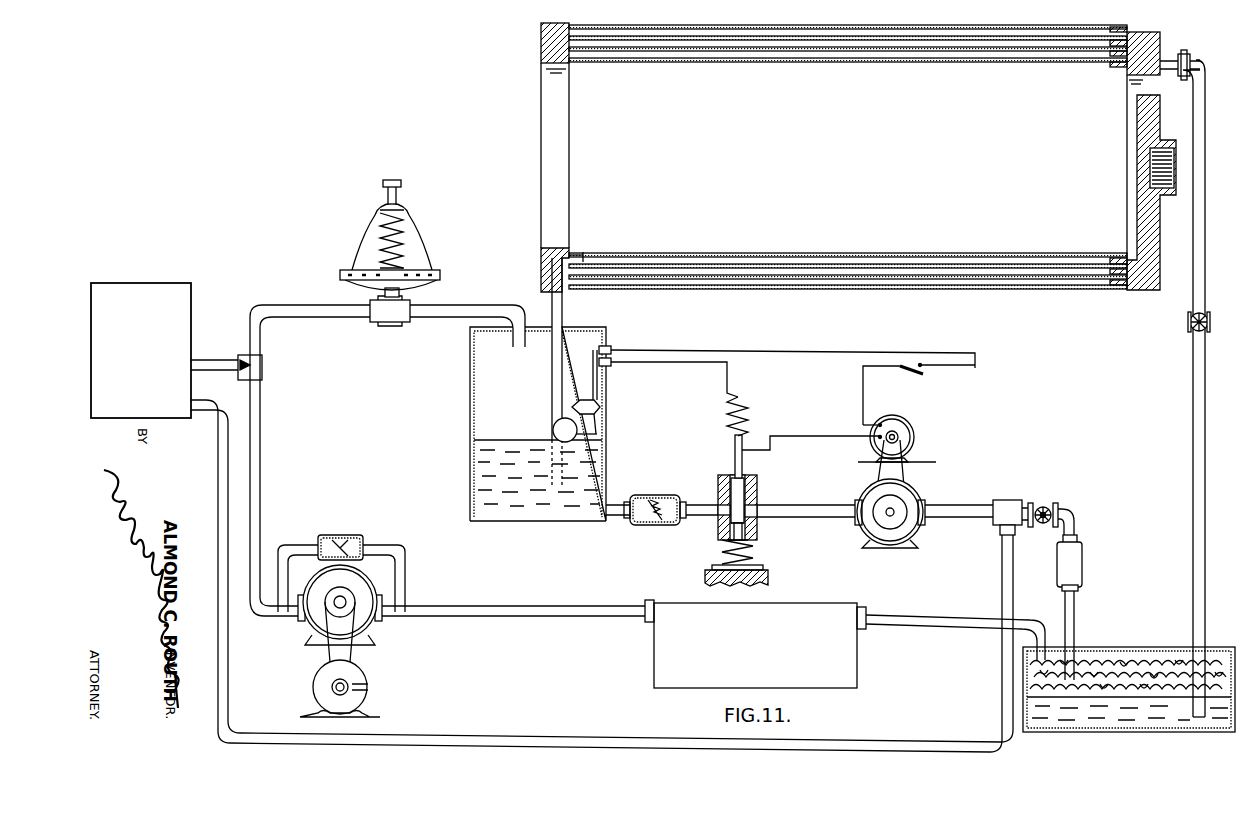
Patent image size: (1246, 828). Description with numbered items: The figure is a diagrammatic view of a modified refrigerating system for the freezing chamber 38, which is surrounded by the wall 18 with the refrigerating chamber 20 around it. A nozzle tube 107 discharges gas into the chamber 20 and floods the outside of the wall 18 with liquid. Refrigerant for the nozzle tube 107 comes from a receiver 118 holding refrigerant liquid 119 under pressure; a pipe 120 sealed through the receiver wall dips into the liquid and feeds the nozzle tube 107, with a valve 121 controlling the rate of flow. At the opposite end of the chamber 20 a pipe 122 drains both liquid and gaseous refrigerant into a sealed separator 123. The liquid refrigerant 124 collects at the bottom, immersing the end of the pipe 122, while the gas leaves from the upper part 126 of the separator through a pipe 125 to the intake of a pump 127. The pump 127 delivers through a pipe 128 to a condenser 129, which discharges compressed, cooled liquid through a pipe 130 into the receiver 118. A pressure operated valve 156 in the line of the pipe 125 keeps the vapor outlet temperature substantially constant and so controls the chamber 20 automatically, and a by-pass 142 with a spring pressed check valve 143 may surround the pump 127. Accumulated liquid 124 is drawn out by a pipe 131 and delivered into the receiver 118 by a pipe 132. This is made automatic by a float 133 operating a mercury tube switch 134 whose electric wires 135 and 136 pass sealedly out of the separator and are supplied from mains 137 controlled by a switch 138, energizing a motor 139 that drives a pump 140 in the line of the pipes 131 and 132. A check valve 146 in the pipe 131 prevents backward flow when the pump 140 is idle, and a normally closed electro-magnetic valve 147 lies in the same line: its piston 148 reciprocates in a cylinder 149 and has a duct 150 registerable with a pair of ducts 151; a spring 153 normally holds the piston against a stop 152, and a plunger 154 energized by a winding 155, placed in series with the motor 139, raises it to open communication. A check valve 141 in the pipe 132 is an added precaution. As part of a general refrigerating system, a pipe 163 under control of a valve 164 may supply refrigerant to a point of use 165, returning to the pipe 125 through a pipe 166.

The wall 18 is at (857, 62).
The refrigerating chamber 20 is at (1023, 62).
The freezing chamber 38 is at (858, 157).
The nozzle tube 107 is at (1138, 62).
The receiver 118 is at (1232, 630).
The refrigerant liquid 119 is at (1120, 727).
The pipe 120 is at (1206, 572).
The valve 121 is at (1196, 332).
The pipe 122 is at (564, 305).
The separator 123 is at (470, 357).
The liquid refrigerant 124 is at (521, 508).
The pipe 125 is at (261, 430).
The vapor space 126 is at (532, 373).
The pump 127 is at (317, 616).
The pipe 128 is at (446, 606).
The condenser 129 is at (797, 608).
The pipe 130 is at (935, 629).
The pipe 131 is at (617, 503).
The pipe 132 is at (985, 510).
The float 133 is at (554, 428).
The mercury tube switch 134 is at (584, 400).
The electric wire 135 is at (592, 378).
The electric wire 136 is at (598, 363).
The mains 137 is at (975, 355).
The switch 138 is at (928, 372).
The motor 139 is at (913, 435).
The pump 140 is at (921, 505).
The check valve 141 is at (1080, 569).
The by-pass 142 is at (297, 544).
The spring pressed check valve 143 is at (356, 537).
The check valve 146 is at (642, 525).
The electro-magnetic valve 147 is at (760, 486).
The piston 148 is at (735, 480).
The cylinder 149 is at (752, 530).
The duct 150 is at (735, 529).
The ducts 151 is at (721, 496).
The stop 152 is at (769, 578).
The spring 153 is at (760, 557).
The plunger 154 is at (745, 466).
The winding 155 is at (755, 428).
The pressure operated valve 156 is at (428, 290).
The pipe 163 is at (215, 447).
The valve 164 is at (1055, 500).
The point of use 165 is at (141, 350).
The pipe 166 is at (222, 352).